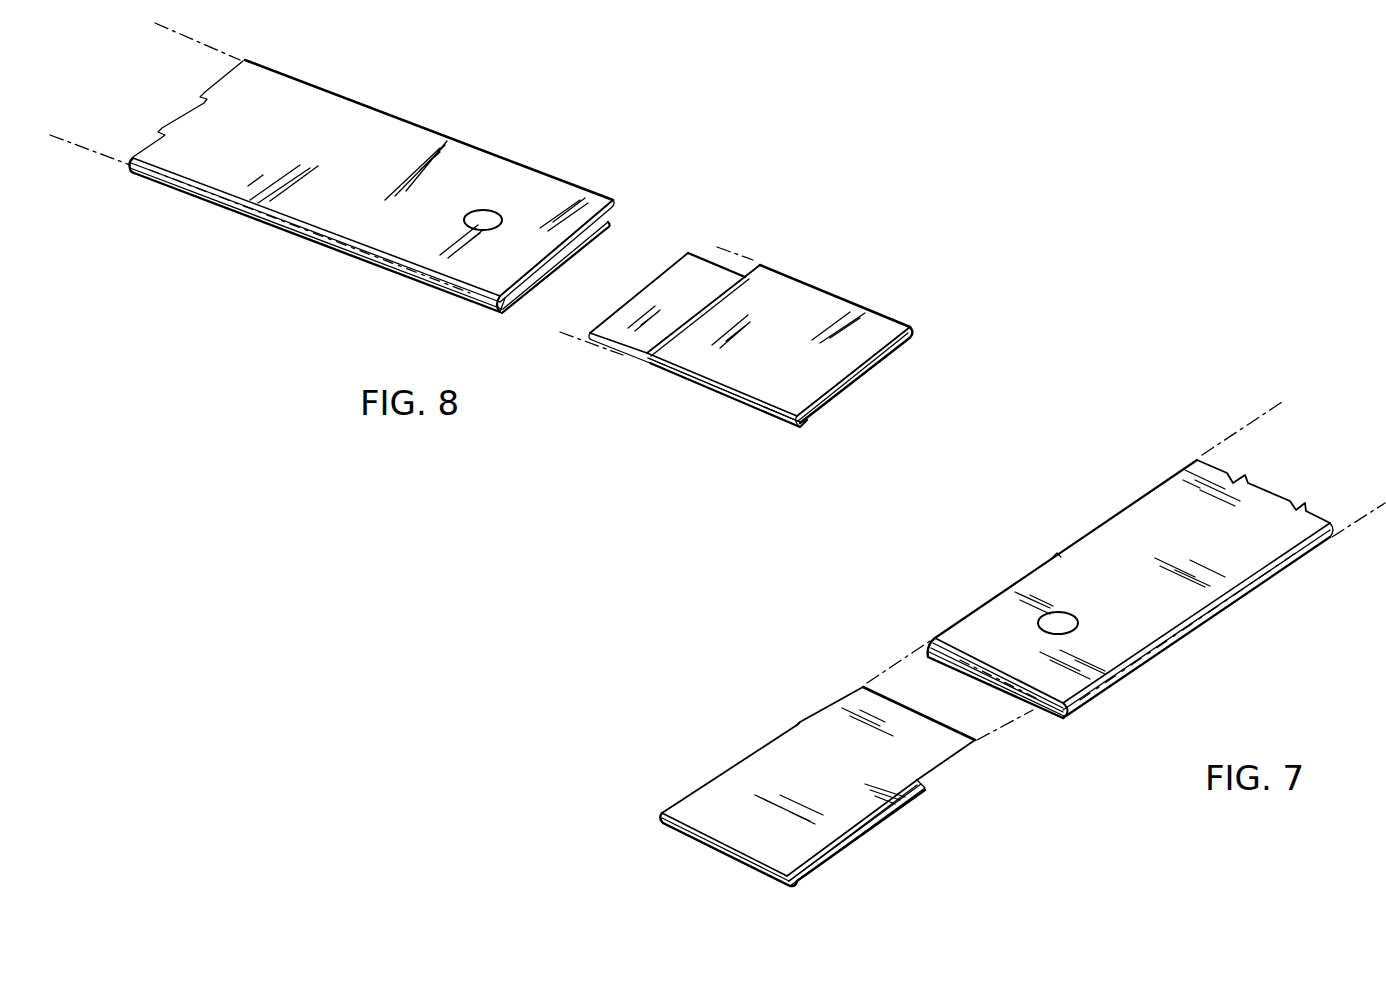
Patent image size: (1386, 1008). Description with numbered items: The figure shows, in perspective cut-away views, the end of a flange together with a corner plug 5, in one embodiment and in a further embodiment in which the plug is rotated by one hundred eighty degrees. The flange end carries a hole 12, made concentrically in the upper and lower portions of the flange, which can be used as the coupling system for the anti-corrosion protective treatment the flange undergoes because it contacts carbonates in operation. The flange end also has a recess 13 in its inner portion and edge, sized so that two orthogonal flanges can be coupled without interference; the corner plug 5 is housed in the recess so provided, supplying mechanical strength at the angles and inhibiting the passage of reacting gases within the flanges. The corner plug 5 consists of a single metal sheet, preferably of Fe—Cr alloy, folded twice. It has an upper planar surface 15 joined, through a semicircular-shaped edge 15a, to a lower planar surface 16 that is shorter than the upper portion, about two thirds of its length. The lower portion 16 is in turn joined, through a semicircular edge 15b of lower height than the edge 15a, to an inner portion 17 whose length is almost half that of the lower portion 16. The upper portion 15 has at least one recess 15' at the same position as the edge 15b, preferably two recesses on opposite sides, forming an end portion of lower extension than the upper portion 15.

In FIG. 8, the corner plug 5 is at (812, 432).
In FIG. 7, the corner plug 5 is at (913, 823).
In FIG. 8, the hole 12 is at (493, 216).
In FIG. 7, the hole 12 is at (1067, 620).
In FIG. 7, the recess 13 is at (1055, 553).
In FIG. 8, the upper planar surface 15 is at (746, 335).
In FIG. 7, the upper planar surface 15 is at (845, 772).
In FIG. 7, the recess 15' is at (911, 710).
In FIG. 8, the edge 15a is at (860, 380).
In FIG. 7, the edge 15a is at (718, 850).
In FIG. 8, the edge 15b is at (645, 358).
In FIG. 7, the edge 15b is at (930, 790).
In FIG. 8, the lower planar surface 16 is at (722, 397).
In FIG. 7, the lower planar surface 16 is at (838, 858).
In FIG. 8, the inner portion 17 is at (687, 378).
In FIG. 7, the inner portion 17 is at (923, 797).